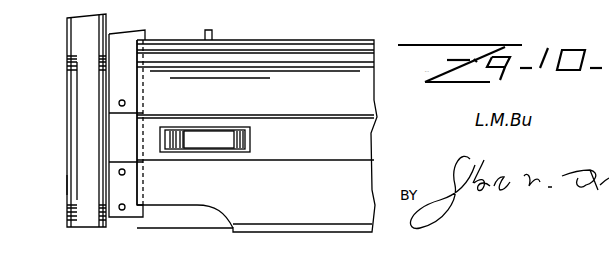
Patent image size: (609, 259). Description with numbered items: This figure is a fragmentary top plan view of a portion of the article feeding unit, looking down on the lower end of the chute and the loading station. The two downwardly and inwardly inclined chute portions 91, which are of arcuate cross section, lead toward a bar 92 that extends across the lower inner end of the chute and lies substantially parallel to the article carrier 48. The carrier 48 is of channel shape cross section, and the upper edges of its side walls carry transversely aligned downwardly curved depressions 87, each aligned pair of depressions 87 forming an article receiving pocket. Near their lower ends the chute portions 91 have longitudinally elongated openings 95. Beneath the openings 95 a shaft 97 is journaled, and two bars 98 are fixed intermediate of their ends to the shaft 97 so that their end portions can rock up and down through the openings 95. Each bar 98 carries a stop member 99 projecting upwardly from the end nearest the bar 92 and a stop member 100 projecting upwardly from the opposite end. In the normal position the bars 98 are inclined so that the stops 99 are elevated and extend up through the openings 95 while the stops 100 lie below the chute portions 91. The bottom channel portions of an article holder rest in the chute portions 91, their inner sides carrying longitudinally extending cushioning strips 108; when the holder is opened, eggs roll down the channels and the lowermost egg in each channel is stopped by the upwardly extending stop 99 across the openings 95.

The article carrier 48 is at (78, 235).
The downwardly curved depressions 87 is at (100, 180).
The chute portions 91 is at (374, 142).
The bar 92 is at (117, 210).
The longitudinally elongated openings 95 is at (251, 142).
The shaft 97 is at (216, 37).
The bars 98 is at (197, 140).
The stop members 99 is at (181, 138).
The stop members 100 is at (252, 140).
The cushioning strips 108 is at (343, 100).